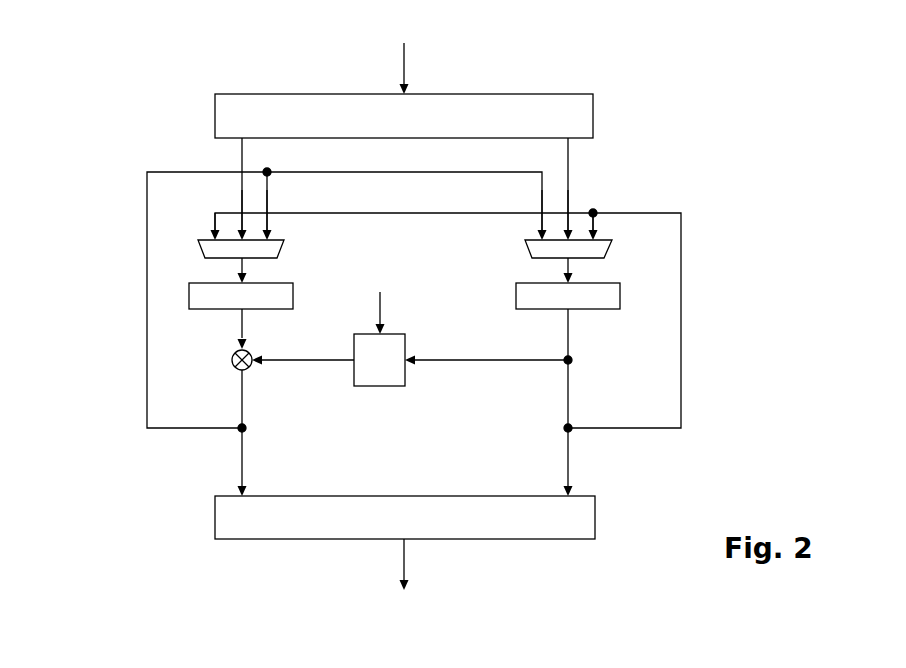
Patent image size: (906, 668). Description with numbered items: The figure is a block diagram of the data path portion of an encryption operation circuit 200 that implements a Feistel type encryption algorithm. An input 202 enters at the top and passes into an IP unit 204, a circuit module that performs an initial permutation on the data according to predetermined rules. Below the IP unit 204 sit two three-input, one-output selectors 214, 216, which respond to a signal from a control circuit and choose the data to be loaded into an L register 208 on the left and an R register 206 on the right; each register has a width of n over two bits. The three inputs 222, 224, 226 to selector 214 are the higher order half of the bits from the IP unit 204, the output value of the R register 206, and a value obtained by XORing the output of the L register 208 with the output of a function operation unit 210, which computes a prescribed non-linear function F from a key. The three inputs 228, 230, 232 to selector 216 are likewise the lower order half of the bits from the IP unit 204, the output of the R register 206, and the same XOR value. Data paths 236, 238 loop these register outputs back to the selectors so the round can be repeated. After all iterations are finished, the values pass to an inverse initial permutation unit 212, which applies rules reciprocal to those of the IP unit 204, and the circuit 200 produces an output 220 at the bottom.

The encryption operation circuit 200 is at (76, 104).
The input 202 is at (437, 27).
The IP unit 204 is at (593, 113).
The R register 206 is at (611, 309).
The L register 208 is at (197, 309).
The function operation unit 210 is at (378, 386).
The IP⁻¹ unit 212 is at (459, 496).
The 3-input-1-output selector 214 is at (284, 249).
The 3-input-1-output selector 216 is at (525, 249).
The output 220 is at (443, 609).
The input to selector 214 222 is at (215, 215).
The input to selector 214 224 is at (240, 208).
The input to selector 214 226 is at (269, 223).
The input to selector 216 228 is at (540, 216).
The input to selector 216 230 is at (575, 205).
The input to selector 216 232 is at (599, 217).
The data path 236 is at (681, 318).
The data path 238 is at (147, 349).